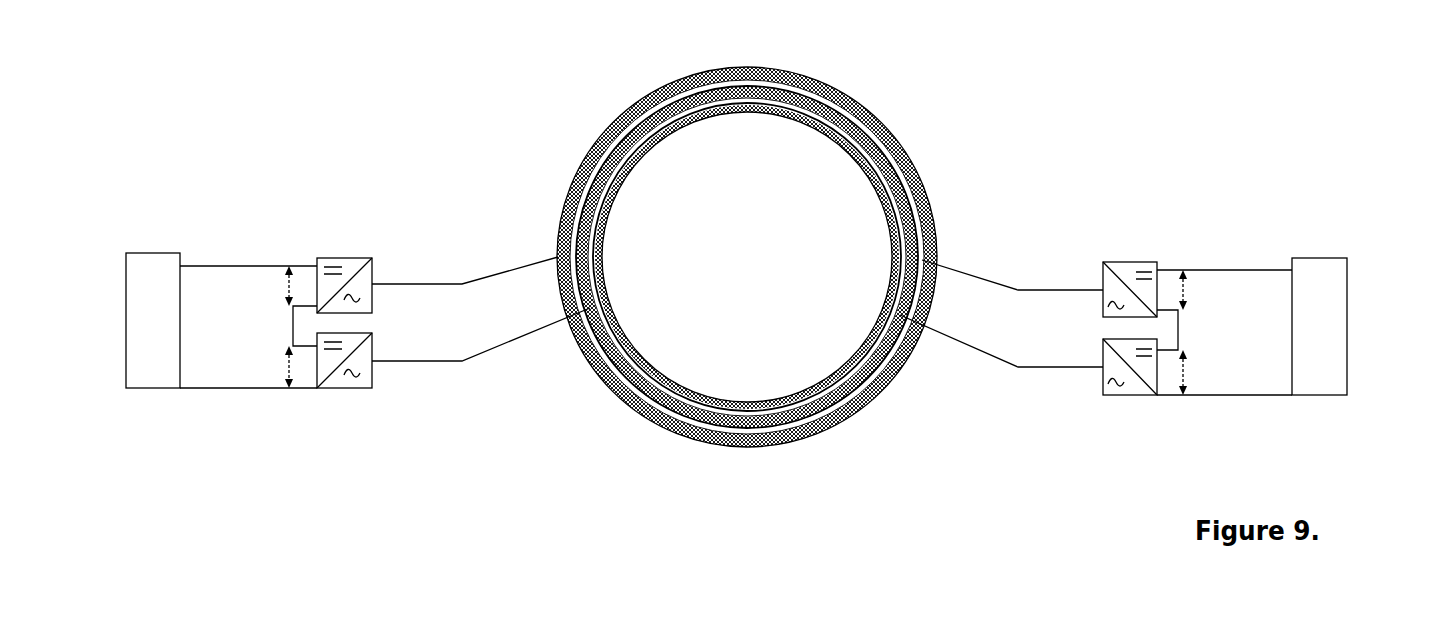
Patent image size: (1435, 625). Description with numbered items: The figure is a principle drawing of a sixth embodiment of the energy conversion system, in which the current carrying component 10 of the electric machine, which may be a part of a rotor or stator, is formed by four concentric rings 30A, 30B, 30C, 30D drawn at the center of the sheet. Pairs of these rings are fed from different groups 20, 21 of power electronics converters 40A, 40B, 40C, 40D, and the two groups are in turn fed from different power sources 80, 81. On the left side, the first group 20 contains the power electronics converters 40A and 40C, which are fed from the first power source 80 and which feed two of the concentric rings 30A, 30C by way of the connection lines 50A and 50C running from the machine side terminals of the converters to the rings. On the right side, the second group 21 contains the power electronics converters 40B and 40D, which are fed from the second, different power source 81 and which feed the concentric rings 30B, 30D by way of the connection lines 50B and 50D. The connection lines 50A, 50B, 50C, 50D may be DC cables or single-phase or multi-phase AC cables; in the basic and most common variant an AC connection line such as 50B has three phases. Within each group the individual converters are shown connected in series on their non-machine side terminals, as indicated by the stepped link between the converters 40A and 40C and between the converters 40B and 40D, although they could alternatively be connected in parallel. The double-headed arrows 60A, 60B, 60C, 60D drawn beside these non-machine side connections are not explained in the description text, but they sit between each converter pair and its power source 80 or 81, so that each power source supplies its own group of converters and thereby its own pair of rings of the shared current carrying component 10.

The current carrying component 10 is at (730, 234).
The first group of power electronics converters 20 is at (325, 273).
The second group of power electronics converters 21 is at (1151, 276).
The concentric ring 30A is at (830, 97).
The concentric ring 30B is at (858, 122).
The concentric ring 30C is at (857, 155).
The concentric ring 30D is at (810, 127).
The power electronics converter 40A is at (347, 257).
The power electronics converter 40B is at (1127, 260).
The power electronics converter 40C is at (375, 380).
The power electronics converter 40D is at (1100, 383).
The connection line 50A is at (393, 283).
The connection line 50B is at (1080, 288).
The connection line 50C is at (392, 360).
The connection line 50D is at (1083, 365).
The bidirectional power flow 60A is at (283, 283).
The bidirectional power flow 60B is at (1188, 285).
The bidirectional power flow 60C is at (283, 363).
The bidirectional power flow 60D is at (1187, 365).
The first power source 80 is at (127, 315).
The second power source 81 is at (1348, 320).